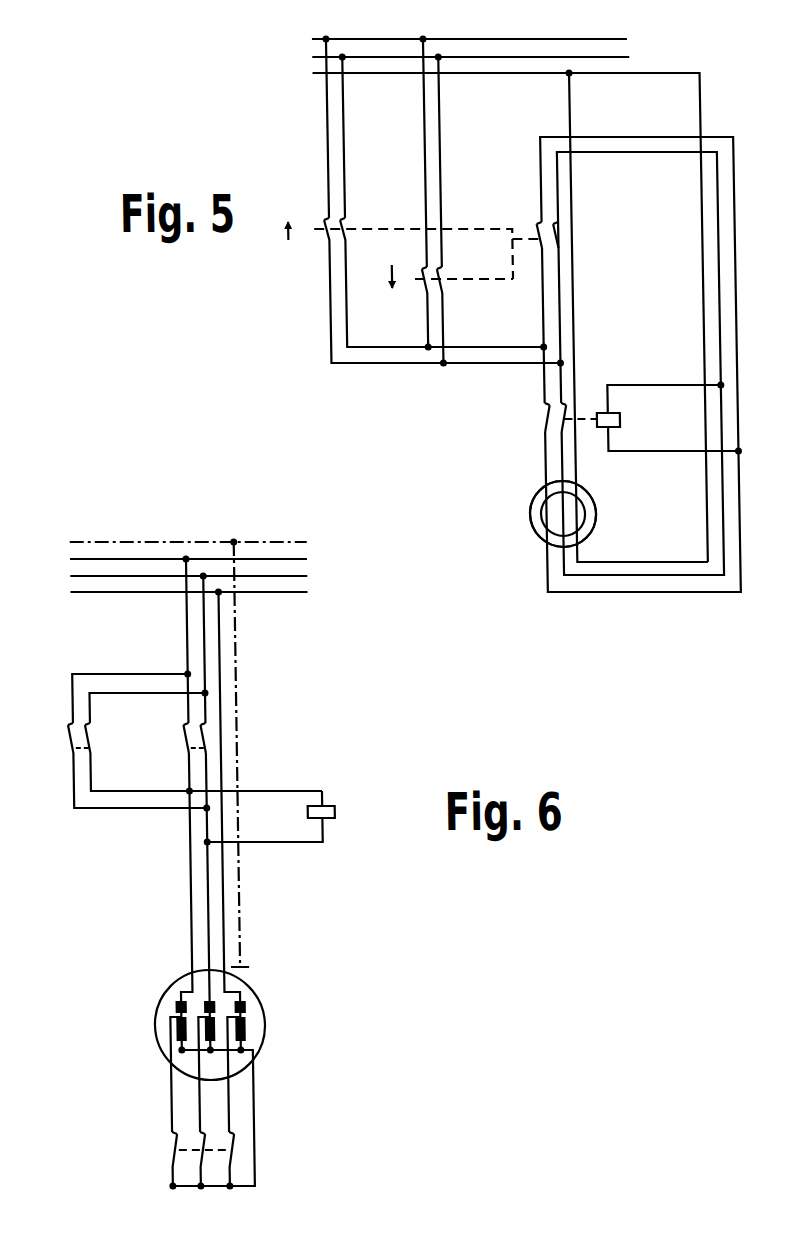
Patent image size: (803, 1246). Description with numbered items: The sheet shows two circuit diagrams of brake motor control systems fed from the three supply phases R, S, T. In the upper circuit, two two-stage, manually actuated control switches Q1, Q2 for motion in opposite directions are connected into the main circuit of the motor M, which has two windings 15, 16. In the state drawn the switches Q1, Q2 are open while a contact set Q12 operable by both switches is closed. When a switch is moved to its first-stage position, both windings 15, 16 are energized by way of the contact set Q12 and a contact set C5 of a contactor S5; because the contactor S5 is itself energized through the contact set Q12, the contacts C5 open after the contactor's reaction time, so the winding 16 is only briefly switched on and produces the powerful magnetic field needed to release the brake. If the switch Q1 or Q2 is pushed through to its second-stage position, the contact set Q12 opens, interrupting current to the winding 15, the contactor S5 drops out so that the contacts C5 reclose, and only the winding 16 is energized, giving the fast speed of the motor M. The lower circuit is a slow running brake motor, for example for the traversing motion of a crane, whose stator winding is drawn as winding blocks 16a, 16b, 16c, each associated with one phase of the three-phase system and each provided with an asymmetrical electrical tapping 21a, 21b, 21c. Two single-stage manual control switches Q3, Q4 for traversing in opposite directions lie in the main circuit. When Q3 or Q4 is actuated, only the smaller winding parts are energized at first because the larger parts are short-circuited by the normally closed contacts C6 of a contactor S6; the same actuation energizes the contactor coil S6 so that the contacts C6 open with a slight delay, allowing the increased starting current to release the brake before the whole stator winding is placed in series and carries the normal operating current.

In FIG. 5, the phase R supply line R is at (459, 38).
In FIG. 6, the phase R supply line R is at (173, 560).
In FIG. 5, the phase S supply line S is at (461, 56).
In FIG. 6, the phase S supply line S is at (173, 578).
In FIG. 5, the phase T supply line T is at (500, 312).
In FIG. 6, the phase T supply line T is at (173, 595).
In FIG. 5, the two-stage manual control switch Q1 is at (322, 218).
In FIG. 5, the two-stage manual control switch Q2 is at (414, 261).
In FIG. 5, the contact set Q12 is at (572, 232).
In FIG. 5, the contact set of contactor S5 C5 is at (536, 423).
In FIG. 5, the contactor S5 is at (614, 419).
In FIG. 5, the motor winding 15 is at (534, 521).
In FIG. 5, the motor winding 16 is at (525, 502).
In FIG. 5, the motor M is at (592, 503).
In FIG. 6, the motor M is at (263, 997).
In FIG. 6, the single-stage manual control switch Q3 is at (62, 745).
In FIG. 6, the single-stage manual control switch Q4 is at (174, 745).
In FIG. 6, the contactor coil S6 is at (331, 811).
In FIG. 6, the asymmetrical electrical tapping 21a is at (171, 1000).
In FIG. 6, the asymmetrical electrical tapping 21b is at (201, 1000).
In FIG. 6, the asymmetrical electrical tapping 21c is at (238, 1000).
In FIG. 6, the winding block 16a is at (170, 1010).
In FIG. 6, the winding block 16b is at (204, 1014).
In FIG. 6, the winding block 16c is at (238, 1012).
In FIG. 6, the normally closed contacts of contactor S6 C6 is at (161, 1150).